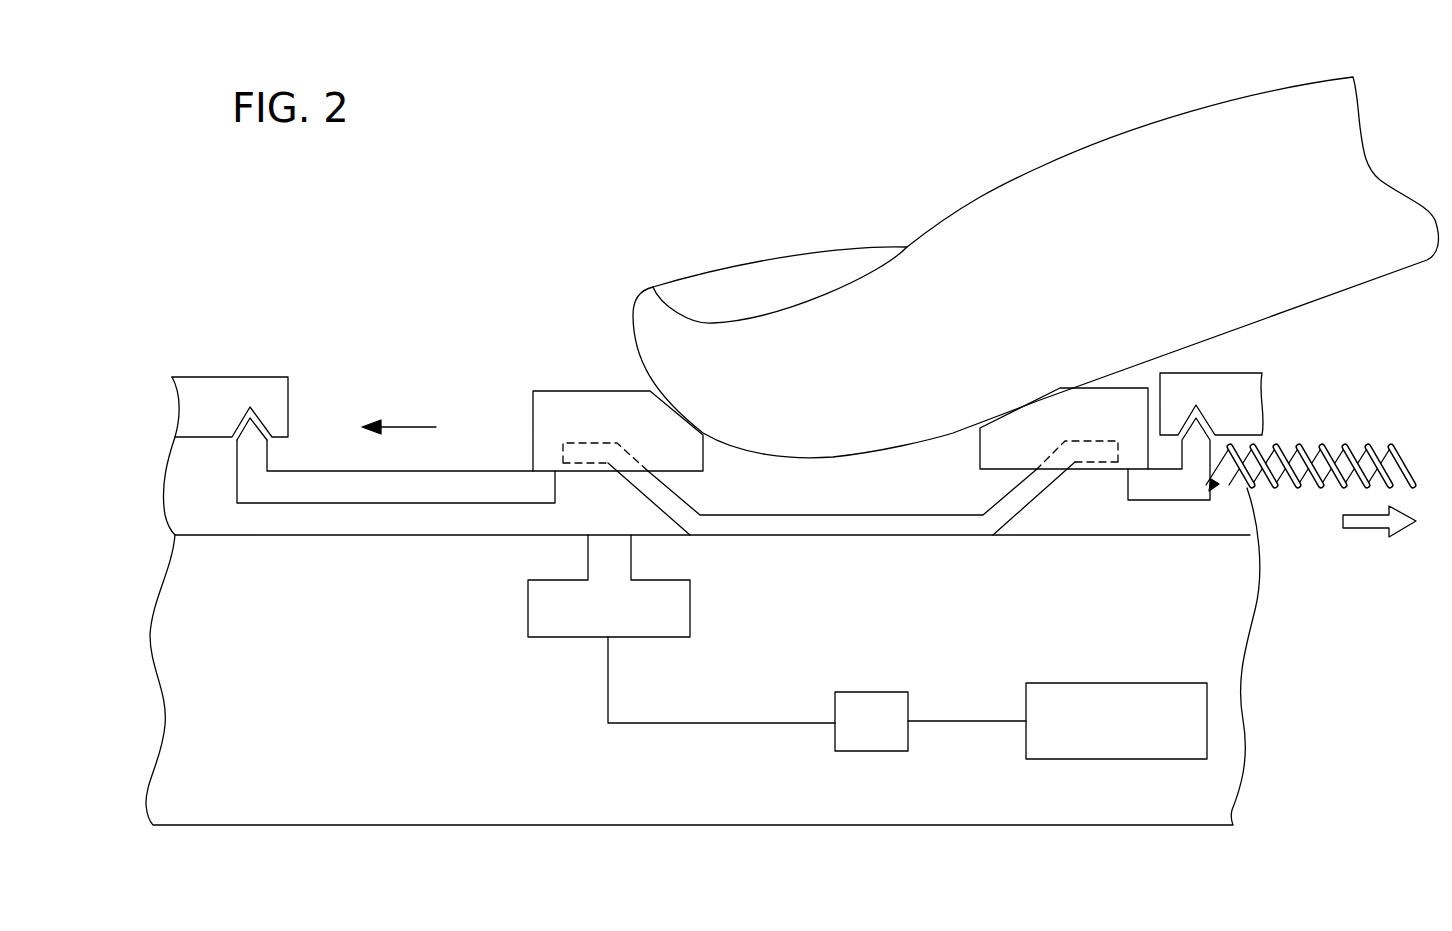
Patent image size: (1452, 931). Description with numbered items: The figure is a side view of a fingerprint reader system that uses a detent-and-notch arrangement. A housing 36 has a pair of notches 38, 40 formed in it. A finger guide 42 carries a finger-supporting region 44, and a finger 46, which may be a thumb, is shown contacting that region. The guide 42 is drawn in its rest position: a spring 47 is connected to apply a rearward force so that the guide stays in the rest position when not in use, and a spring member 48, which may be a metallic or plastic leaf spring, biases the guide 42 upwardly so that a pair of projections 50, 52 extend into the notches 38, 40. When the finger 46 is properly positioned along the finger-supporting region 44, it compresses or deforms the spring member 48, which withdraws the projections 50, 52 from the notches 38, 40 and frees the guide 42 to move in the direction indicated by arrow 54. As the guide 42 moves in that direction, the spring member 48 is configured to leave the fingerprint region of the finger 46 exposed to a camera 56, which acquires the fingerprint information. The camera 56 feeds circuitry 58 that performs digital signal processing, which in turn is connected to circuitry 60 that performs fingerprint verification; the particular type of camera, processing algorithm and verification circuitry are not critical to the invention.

The housing 36 is at (255, 378).
The notch 38 is at (258, 421).
The notch 40 is at (1208, 422).
The finger guide 42 is at (550, 396).
The finger-supporting region 44 is at (668, 406).
The finger 46 is at (1058, 162).
The spring 47 is at (1350, 447).
The spring member 48 is at (895, 535).
The projection 50 is at (238, 472).
The projection 52 is at (1205, 492).
The arrow 54 is at (415, 427).
The camera 56 is at (527, 607).
The circuitry for digital signal processing 58 is at (858, 751).
The circuitry for fingerprint verification 60 is at (1133, 759).